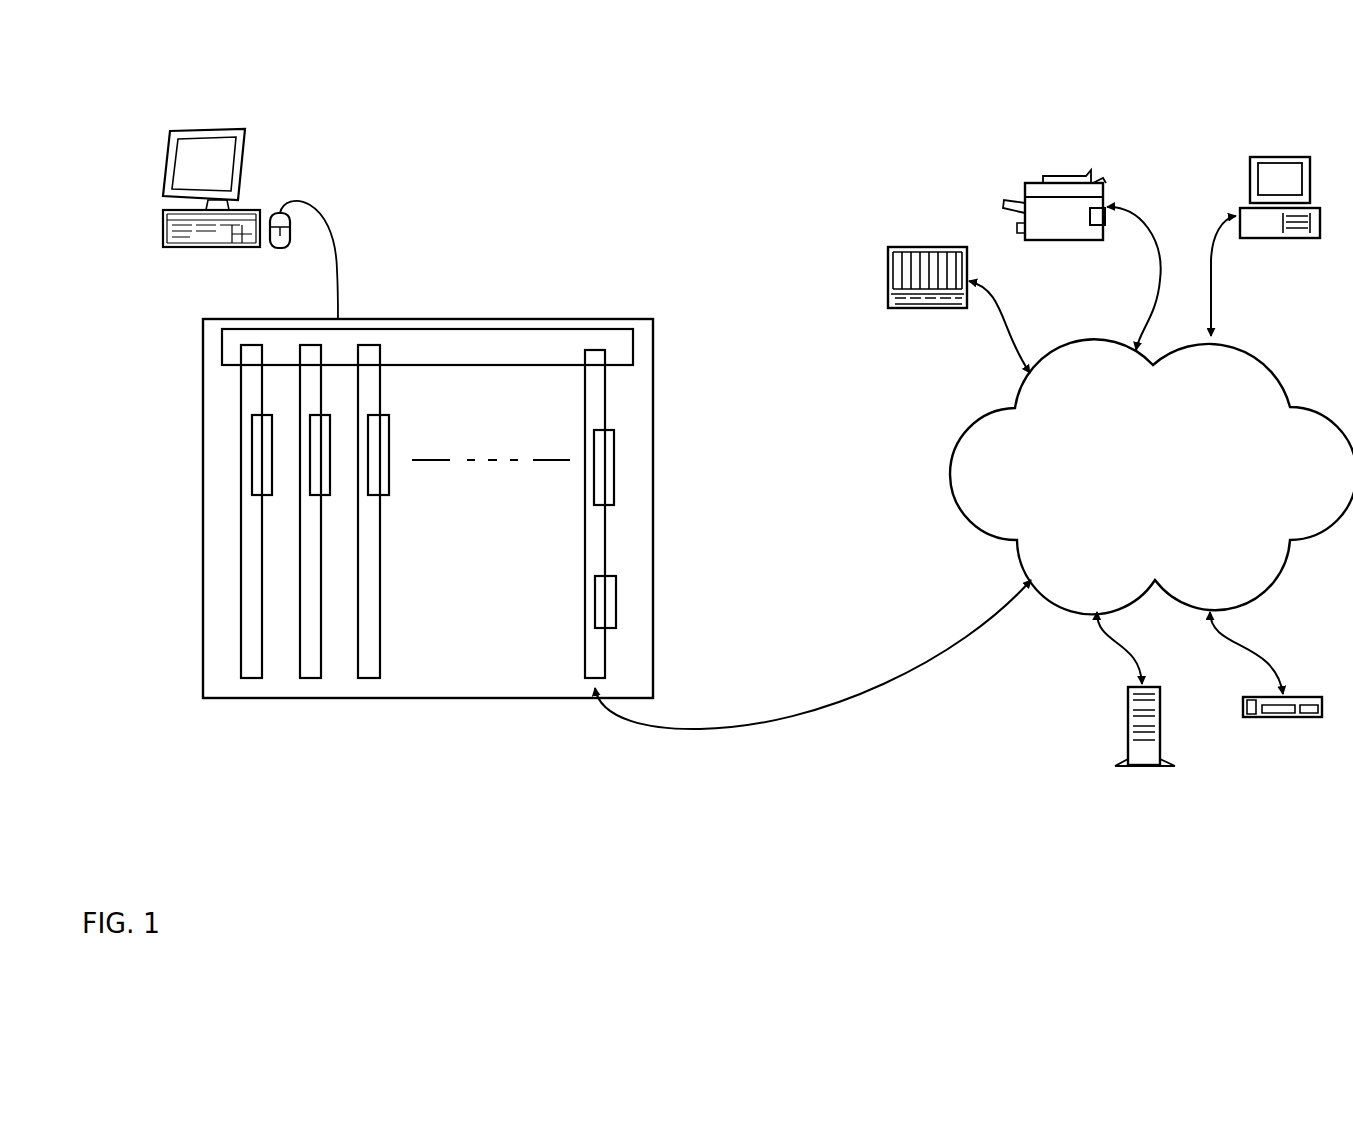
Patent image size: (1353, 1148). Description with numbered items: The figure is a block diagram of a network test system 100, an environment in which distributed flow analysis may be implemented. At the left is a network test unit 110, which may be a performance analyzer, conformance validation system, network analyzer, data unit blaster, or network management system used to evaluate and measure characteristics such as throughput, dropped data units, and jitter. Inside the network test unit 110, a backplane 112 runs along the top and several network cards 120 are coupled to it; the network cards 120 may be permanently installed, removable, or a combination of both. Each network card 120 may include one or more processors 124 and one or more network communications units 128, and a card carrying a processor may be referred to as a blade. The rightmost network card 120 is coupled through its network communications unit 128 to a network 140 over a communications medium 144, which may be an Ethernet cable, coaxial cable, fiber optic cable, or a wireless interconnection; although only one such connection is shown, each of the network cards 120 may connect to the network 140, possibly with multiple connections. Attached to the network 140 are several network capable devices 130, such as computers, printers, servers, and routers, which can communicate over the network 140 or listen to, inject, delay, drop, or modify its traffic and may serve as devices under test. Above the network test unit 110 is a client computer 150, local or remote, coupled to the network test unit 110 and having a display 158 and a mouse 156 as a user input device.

The network test system 100 is at (638, 125).
The network test unit 110 is at (542, 547).
The backplane 112 is at (428, 347).
The network card 120 is at (635, 735).
The processor 124 is at (614, 470).
The network communications unit 128 is at (616, 600).
The network capable device 130 is at (1105, 495).
The network 140 is at (1151, 476).
The communications medium 144 is at (747, 729).
The client computer 150 is at (163, 228).
The mouse 156 is at (280, 249).
The display 158 is at (171, 168).